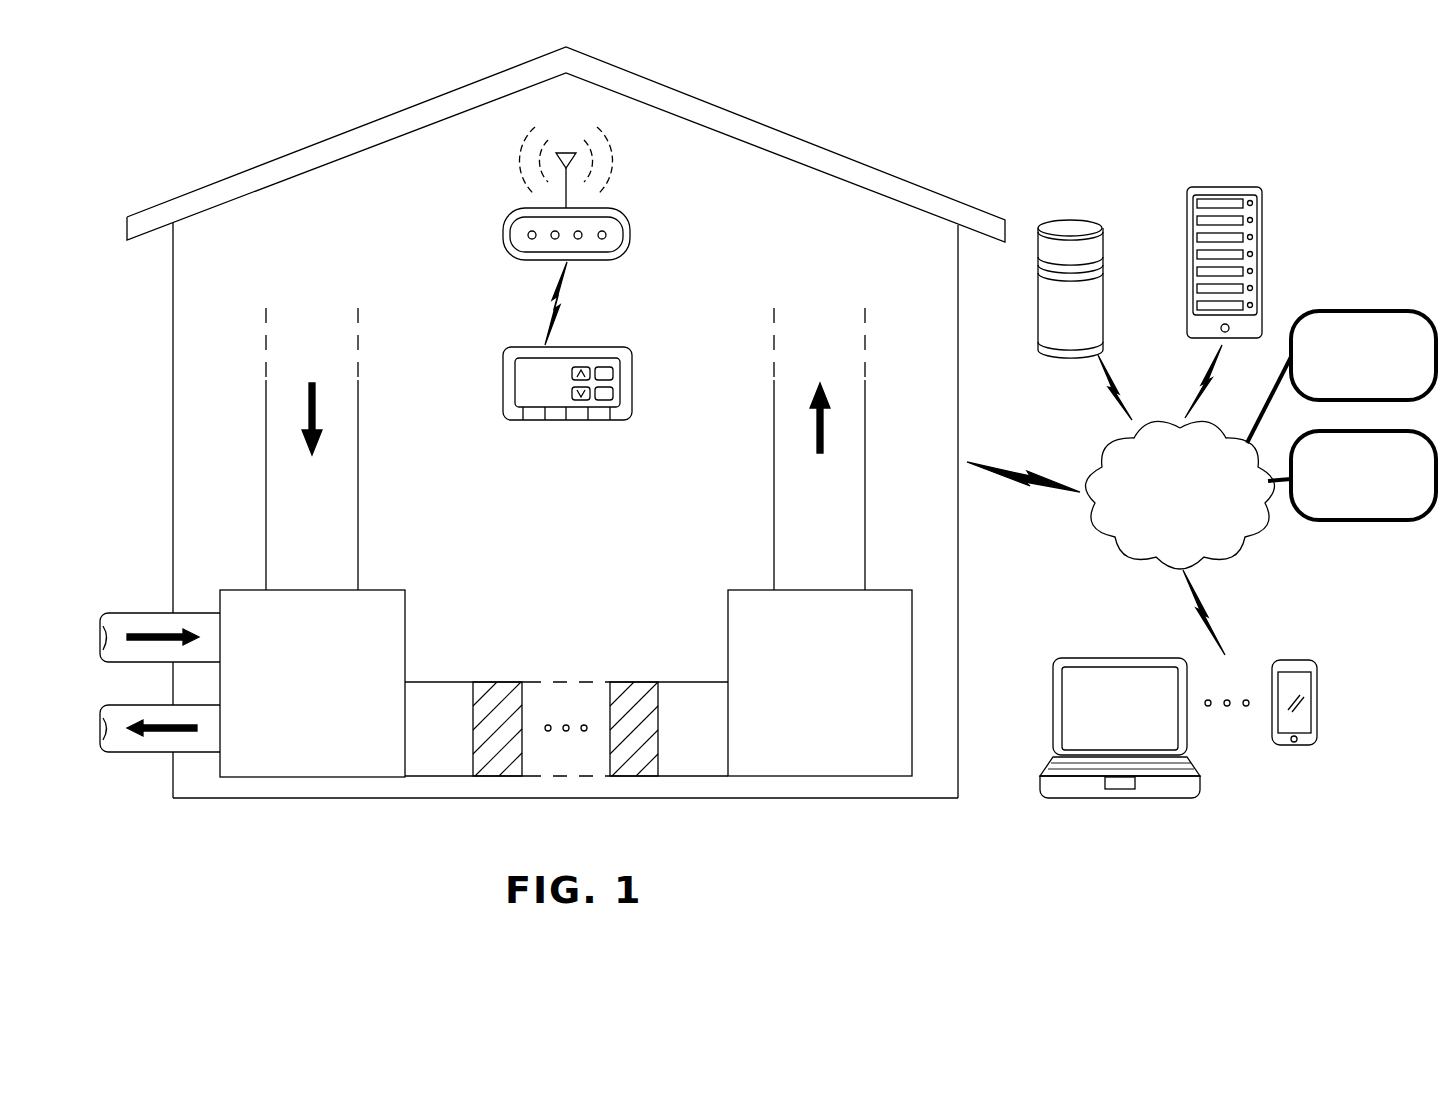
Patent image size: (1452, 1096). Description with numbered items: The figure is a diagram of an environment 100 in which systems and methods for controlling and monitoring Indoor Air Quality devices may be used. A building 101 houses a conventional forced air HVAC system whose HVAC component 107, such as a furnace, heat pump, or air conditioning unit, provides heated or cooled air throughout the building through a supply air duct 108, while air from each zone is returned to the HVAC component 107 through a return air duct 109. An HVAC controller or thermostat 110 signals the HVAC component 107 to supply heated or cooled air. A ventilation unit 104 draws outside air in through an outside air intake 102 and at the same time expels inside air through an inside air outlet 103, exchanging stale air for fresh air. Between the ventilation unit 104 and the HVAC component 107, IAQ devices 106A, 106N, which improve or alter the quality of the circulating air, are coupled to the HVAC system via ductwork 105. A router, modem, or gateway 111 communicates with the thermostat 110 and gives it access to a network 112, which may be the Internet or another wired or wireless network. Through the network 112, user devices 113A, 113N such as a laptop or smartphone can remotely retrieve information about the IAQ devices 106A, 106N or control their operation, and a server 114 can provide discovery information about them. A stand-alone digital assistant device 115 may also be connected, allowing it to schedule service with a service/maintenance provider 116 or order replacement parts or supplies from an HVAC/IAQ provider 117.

The environment 100 is at (1150, 92).
The building 101 is at (348, 131).
The outside air intake 102 is at (141, 612).
The inside air outlet 103 is at (141, 754).
The ventilation unit 104 is at (312, 683).
The ductwork 105 is at (565, 786).
The IAQ device 106A is at (497, 690).
The IAQ device 106N is at (636, 690).
The HVAC component 107 is at (820, 683).
The supply air duct 108 is at (866, 490).
The return air duct 109 is at (266, 490).
The HVAC controller or thermostat 110 is at (503, 385).
The router, modem, or gateway 111 is at (503, 237).
The network 112 is at (1246, 557).
The user device 113A is at (1118, 800).
The user device 113N is at (1295, 748).
The server 114 is at (1225, 186).
The digital assistant device 115 is at (1089, 226).
The service/maintenance provider 116 is at (1348, 310).
The HVAC/IAQ provider 117 is at (1381, 521).